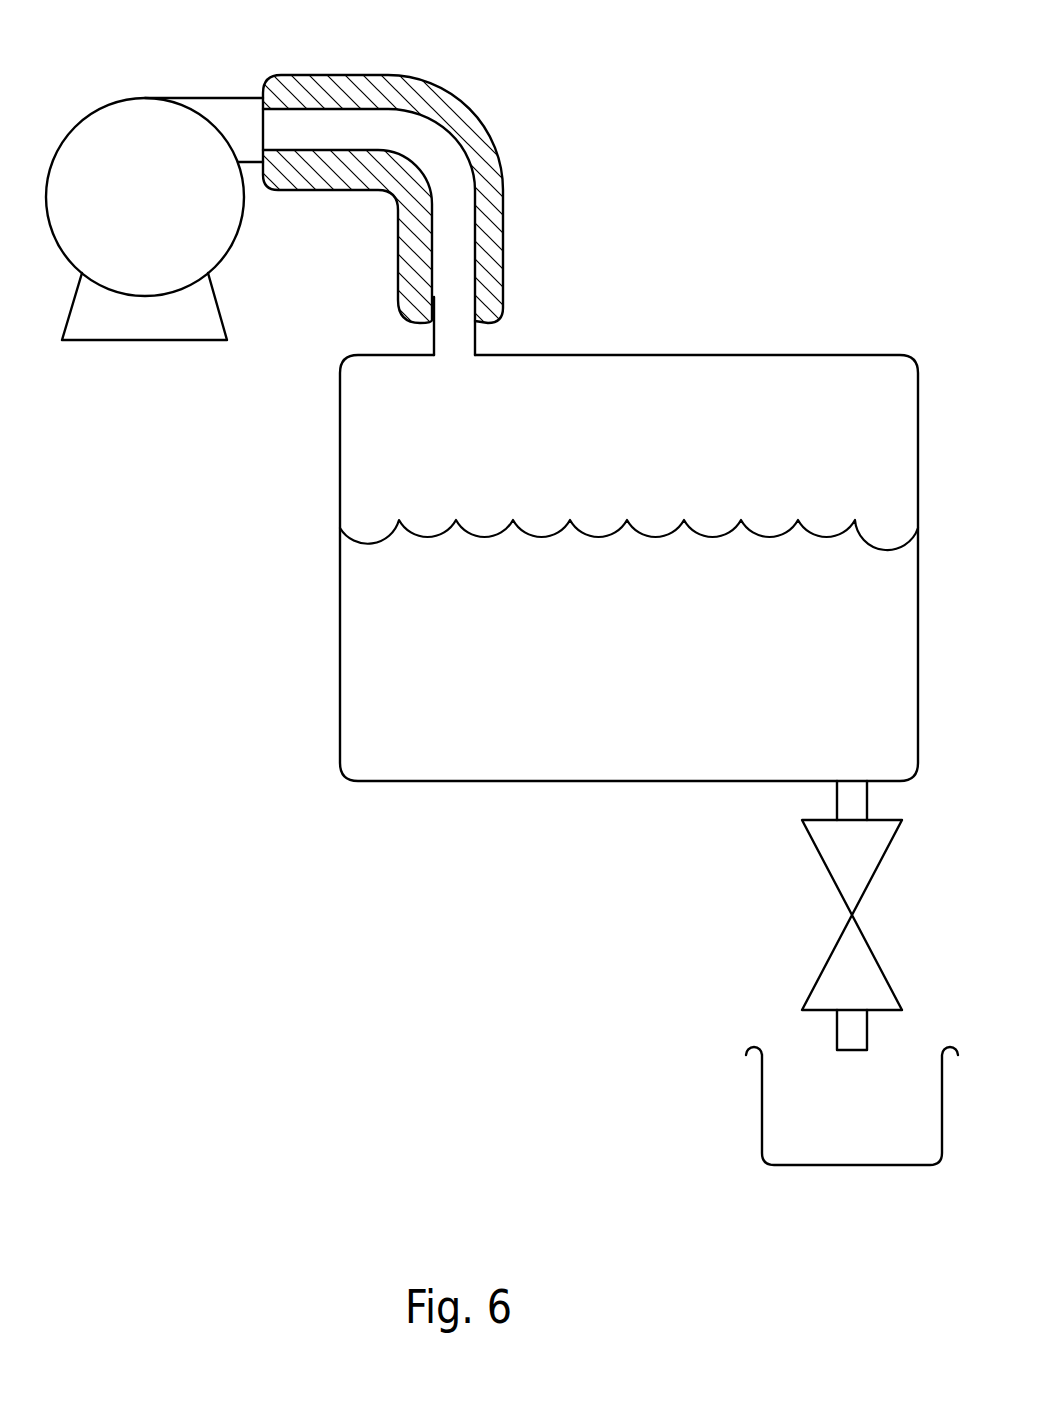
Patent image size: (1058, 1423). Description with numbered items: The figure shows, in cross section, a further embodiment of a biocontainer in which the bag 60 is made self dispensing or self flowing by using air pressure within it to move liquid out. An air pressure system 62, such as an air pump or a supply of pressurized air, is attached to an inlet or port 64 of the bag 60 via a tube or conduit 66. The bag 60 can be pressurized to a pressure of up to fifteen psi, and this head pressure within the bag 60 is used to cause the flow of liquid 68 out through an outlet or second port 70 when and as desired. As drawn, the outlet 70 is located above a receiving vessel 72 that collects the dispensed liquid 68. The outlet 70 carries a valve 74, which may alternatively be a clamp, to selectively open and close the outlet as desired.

The bag 60 is at (340, 462).
The air pressure system 62 is at (142, 185).
The inlet or port 64 is at (478, 344).
The tube or conduit 66 is at (500, 171).
The liquid 68 is at (619, 656).
The outlet or second port 70 is at (837, 803).
The receiving vessel 72 is at (760, 1122).
The valve 74 is at (840, 957).